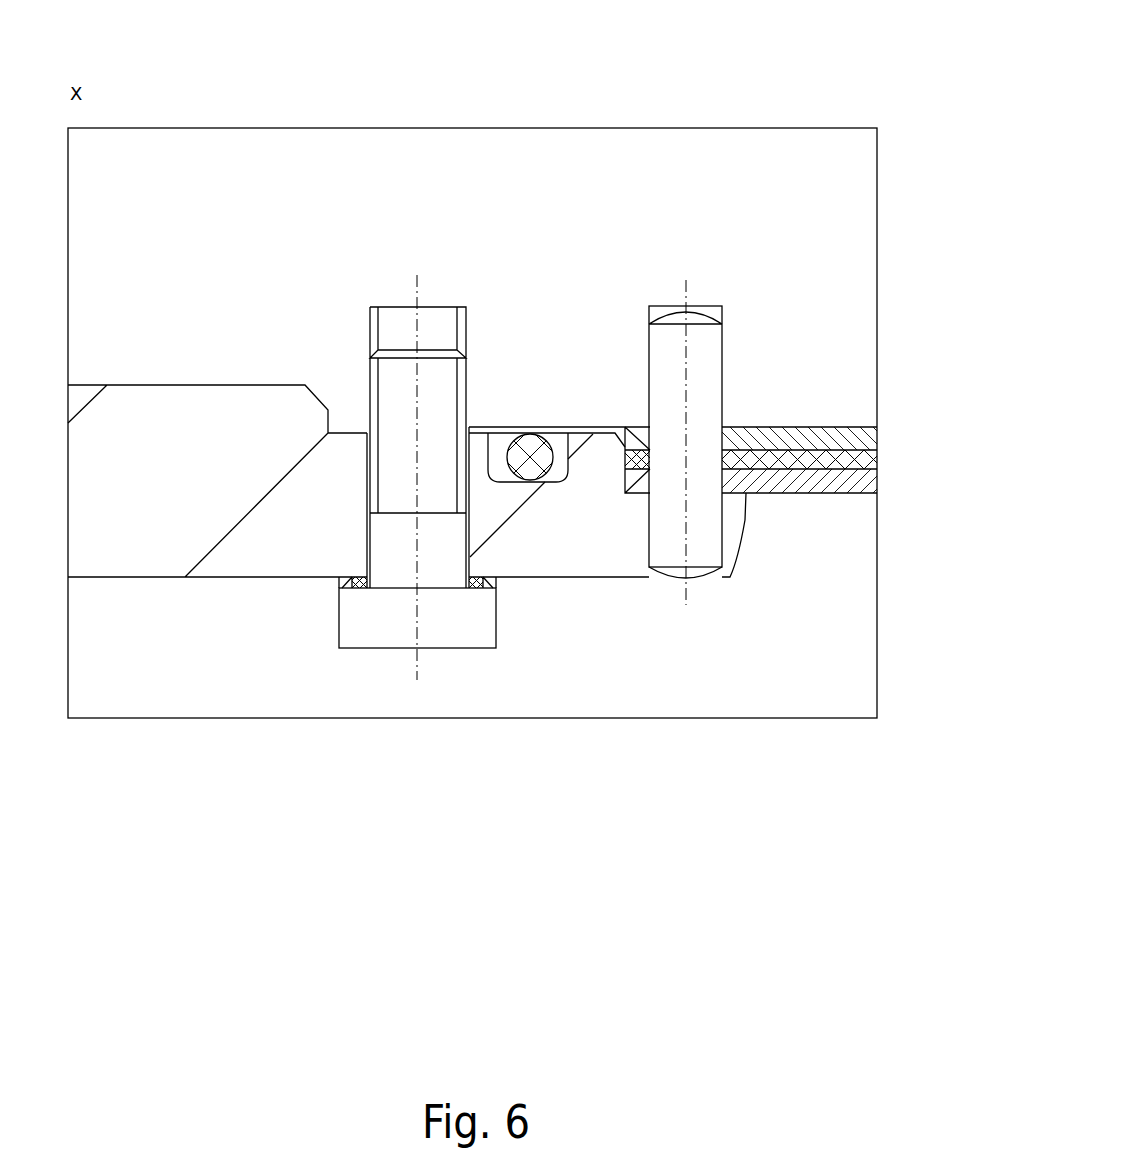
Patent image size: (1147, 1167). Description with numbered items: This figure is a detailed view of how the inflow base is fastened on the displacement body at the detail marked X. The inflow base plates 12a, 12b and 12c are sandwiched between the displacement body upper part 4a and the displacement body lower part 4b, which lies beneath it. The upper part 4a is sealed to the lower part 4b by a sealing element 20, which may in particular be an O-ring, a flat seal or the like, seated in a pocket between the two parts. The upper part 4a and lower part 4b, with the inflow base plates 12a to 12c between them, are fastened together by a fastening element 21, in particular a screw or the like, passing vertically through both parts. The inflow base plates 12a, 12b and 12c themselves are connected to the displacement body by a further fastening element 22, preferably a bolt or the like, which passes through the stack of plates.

The displacement body upper part 4a is at (445, 208).
The displacement body lower part 4b is at (173, 517).
The inflow base plate 12a is at (865, 437).
The inflow base plate 12b is at (868, 458).
The inflow base plate 12c is at (867, 478).
The sealing element 20 is at (533, 460).
The fastening element 21 is at (443, 652).
The fastening element 22 is at (705, 582).